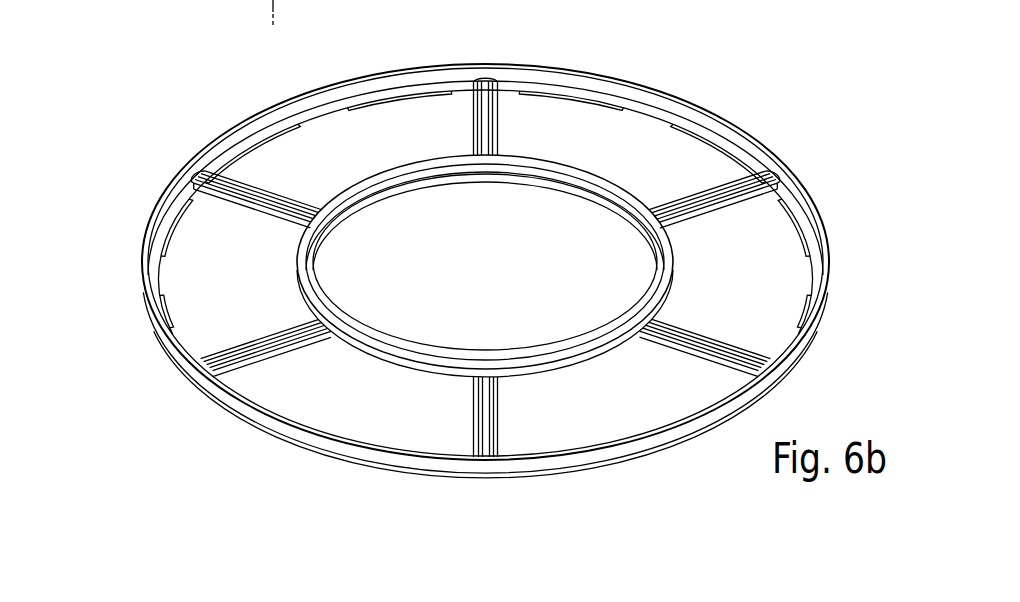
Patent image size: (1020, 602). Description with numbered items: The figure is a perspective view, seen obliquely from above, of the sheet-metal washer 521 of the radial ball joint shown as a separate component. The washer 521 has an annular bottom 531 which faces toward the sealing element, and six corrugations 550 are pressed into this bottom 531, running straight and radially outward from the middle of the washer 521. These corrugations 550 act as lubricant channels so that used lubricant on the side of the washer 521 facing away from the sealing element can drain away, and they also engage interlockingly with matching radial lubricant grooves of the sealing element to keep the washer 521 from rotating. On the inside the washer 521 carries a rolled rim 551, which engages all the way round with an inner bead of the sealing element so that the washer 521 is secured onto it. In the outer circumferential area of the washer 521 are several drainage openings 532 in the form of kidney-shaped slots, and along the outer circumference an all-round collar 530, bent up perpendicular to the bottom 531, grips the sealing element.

The sheet-metal washer 521 is at (733, 104).
The collar 530 is at (258, 418).
The annular bottom 531 is at (614, 423).
The drainage openings 532 is at (160, 258).
The corrugations 550 is at (485, 423).
The rolled rim 551 is at (372, 178).